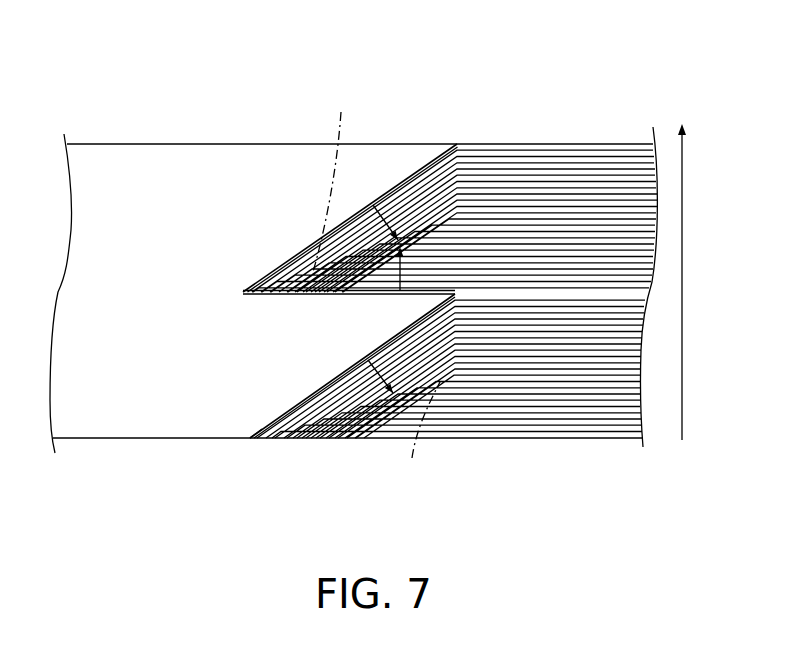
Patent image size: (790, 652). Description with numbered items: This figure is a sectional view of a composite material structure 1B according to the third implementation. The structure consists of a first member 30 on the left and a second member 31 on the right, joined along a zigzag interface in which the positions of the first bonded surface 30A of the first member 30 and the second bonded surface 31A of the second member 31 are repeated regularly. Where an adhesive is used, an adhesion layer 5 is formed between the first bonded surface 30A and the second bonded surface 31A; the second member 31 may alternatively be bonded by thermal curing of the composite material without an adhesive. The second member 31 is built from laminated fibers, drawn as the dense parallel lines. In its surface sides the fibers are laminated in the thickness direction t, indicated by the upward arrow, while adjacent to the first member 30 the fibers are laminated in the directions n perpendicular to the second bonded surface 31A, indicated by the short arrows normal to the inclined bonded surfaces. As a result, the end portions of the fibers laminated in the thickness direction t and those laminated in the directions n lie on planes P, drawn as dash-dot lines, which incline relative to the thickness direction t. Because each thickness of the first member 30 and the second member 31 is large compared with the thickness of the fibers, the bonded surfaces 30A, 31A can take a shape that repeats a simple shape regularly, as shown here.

The composite material structure 1B is at (658, 64).
The first member 30 is at (232, 143).
The second member 31 is at (561, 143).
The adhesion layer 5 is at (452, 143).
The first bonded surface 30A is at (290, 410).
The second bonded surface 31A is at (265, 432).
The plane P is at (376, 286).
The direction perpendicular to the second bonded surface n is at (400, 291).
The thickness direction t is at (682, 266).